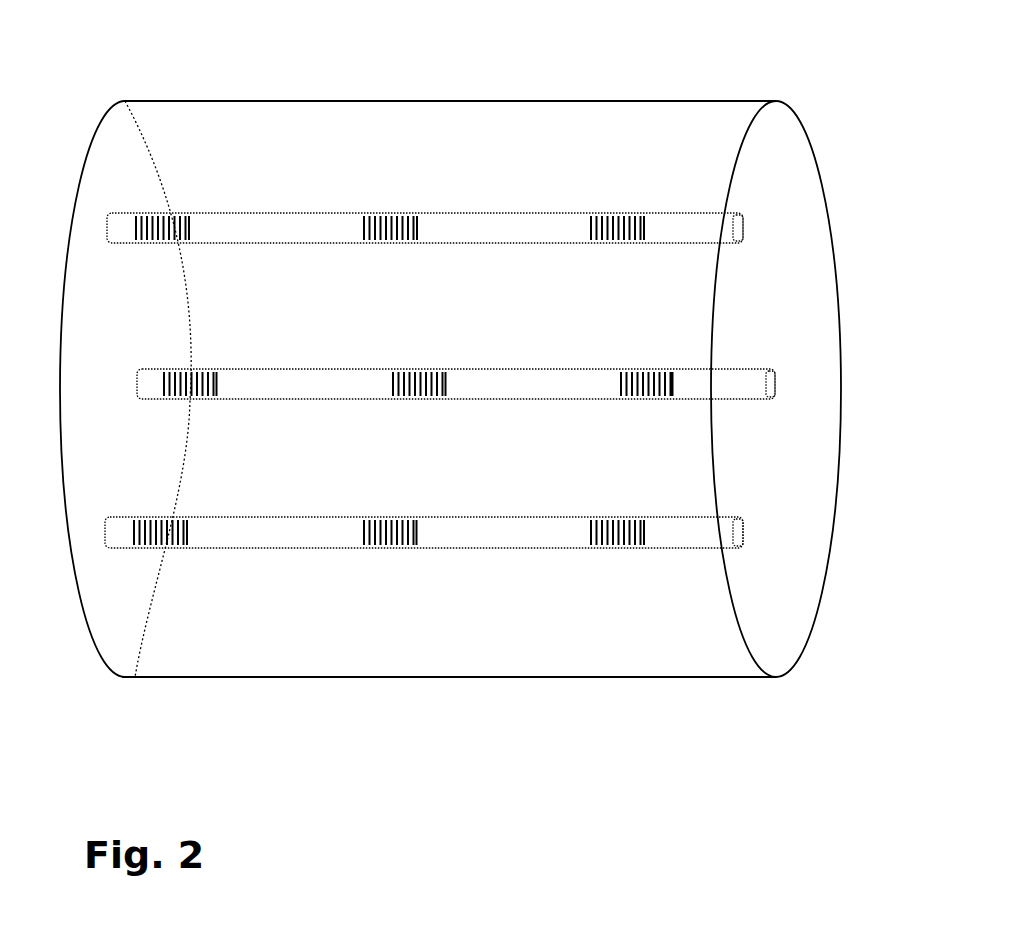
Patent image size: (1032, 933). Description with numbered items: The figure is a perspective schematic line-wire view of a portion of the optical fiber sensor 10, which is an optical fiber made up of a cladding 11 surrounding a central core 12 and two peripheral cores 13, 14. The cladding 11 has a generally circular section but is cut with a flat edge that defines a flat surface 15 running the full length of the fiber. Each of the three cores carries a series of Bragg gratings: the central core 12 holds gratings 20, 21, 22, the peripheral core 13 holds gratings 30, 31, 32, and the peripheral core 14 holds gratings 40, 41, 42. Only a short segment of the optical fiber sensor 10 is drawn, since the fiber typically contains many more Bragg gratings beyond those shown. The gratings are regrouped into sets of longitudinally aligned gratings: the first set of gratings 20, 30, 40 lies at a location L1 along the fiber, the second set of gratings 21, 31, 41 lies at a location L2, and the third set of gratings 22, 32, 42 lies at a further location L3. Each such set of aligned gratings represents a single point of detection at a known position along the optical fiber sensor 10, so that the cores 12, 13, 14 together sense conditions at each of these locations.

The optical fiber sensor 10 is at (80, 665).
The cladding 11 is at (773, 147).
The central core 12 is at (778, 383).
The peripheral core 13 is at (742, 540).
The peripheral core 14 is at (744, 228).
The flat surface 15 is at (812, 583).
The grating 20 is at (219, 386).
The grating 21 is at (447, 386).
The grating 22 is at (619, 386).
The grating 30 is at (190, 534).
The grating 31 is at (419, 534).
The grating 32 is at (589, 534).
The grating 40 is at (192, 228).
The grating 41 is at (419, 232).
The grating 42 is at (589, 232).
The location L1 is at (161, 186).
The location L2 is at (390, 186).
The third axial position L3 is at (617, 186).